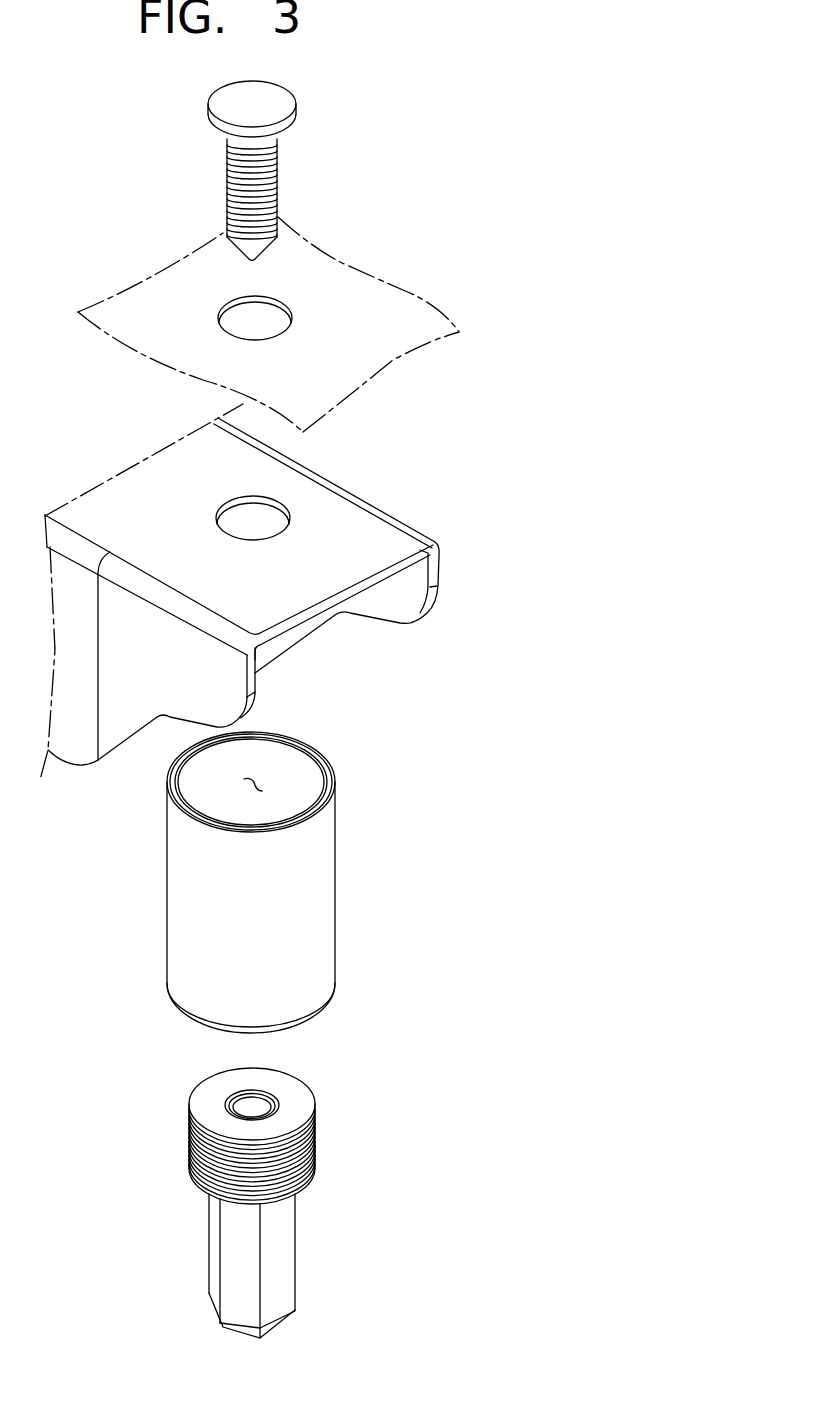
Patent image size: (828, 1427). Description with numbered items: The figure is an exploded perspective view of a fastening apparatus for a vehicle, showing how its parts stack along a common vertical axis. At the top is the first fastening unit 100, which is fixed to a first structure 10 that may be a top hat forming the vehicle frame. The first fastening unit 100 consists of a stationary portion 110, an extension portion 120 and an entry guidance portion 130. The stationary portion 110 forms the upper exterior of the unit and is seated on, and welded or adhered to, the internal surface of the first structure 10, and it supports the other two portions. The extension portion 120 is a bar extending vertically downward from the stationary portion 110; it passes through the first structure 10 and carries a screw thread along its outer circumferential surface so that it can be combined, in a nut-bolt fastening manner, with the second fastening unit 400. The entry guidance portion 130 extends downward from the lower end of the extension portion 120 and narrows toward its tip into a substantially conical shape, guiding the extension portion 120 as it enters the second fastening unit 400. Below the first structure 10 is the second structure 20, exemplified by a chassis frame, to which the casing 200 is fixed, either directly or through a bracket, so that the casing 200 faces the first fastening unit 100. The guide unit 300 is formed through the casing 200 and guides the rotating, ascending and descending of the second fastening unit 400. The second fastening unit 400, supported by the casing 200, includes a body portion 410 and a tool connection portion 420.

The first fastening unit 100 is at (331, 171).
The stationary portion 110 is at (277, 112).
The extension portion 120 is at (277, 177).
The entry guidance portion 130 is at (313, 237).
The first structure 10 is at (372, 317).
The second structure 20 is at (352, 535).
The casing 200 is at (293, 887).
The guide unit 300 is at (260, 782).
The second fastening unit 400 is at (344, 1203).
The body portion 410 is at (307, 1155).
The tool connection portion 420 is at (278, 1247).